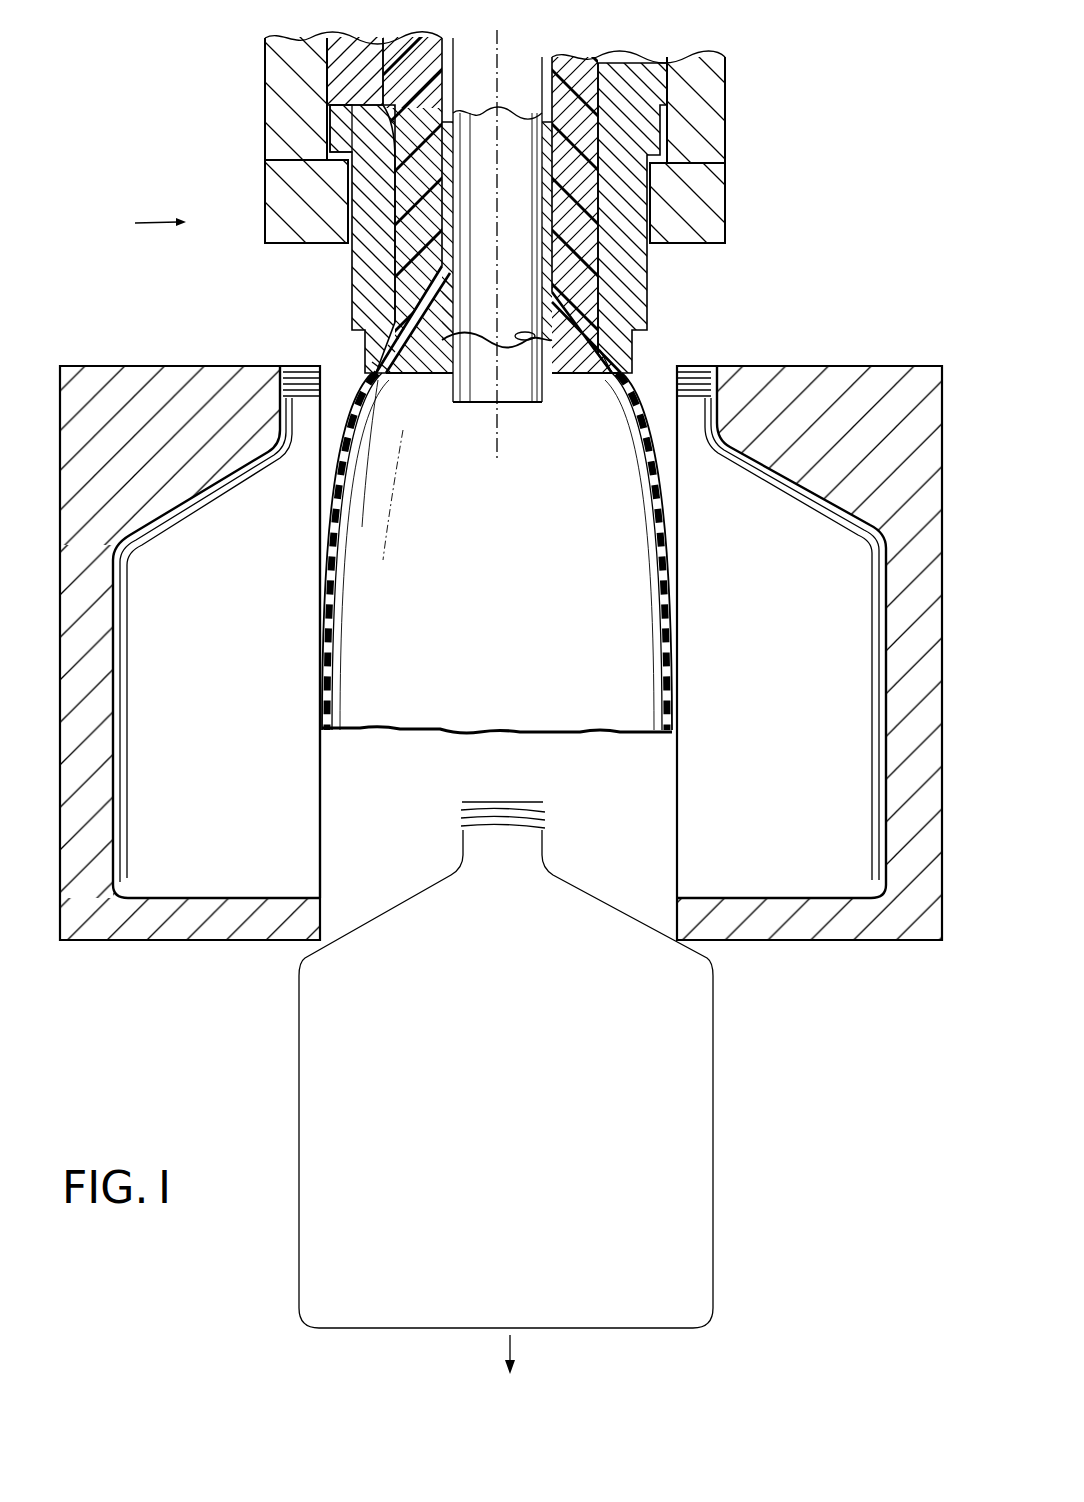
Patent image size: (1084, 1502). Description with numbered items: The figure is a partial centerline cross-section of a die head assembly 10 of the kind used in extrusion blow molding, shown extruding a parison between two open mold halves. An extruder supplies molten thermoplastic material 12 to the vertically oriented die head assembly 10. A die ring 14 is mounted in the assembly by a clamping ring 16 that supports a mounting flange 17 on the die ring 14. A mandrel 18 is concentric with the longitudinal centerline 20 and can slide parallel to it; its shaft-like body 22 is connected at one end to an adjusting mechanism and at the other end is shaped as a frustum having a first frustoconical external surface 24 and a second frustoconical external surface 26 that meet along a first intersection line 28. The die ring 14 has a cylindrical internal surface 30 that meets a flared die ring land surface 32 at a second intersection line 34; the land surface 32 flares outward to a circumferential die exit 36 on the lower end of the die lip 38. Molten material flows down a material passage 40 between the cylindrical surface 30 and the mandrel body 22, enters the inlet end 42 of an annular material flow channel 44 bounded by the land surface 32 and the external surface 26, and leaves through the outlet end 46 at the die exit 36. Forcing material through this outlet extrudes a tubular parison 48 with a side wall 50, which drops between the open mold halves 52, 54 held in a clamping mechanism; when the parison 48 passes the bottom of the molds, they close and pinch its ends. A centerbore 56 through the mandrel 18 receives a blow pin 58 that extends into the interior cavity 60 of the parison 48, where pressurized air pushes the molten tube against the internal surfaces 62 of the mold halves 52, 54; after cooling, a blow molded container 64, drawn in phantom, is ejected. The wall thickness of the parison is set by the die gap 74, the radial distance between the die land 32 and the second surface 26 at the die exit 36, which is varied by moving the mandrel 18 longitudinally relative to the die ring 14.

The die head assembly 10 is at (143, 221).
The molten thermoplastic material 12 is at (590, 188).
The die ring 14 is at (526, 218).
The clamping ring 16 is at (730, 190).
The mounting flange 17 is at (340, 132).
The mandrel 18 is at (471, 55).
The longitudinal centerline 20 is at (502, 40).
The mandrel body 22 is at (410, 186).
The first frustoconical external surface 24 is at (405, 318).
The second frustoconical external surface 26 is at (612, 352).
The first intersection line 28 is at (362, 239).
The cylindrical internal surface 30 is at (421, 188).
The die ring land surface 32 is at (597, 347).
The second intersection line 34 is at (392, 350).
The die exit 36 is at (376, 366).
The die lip 38 is at (388, 370).
The material passage 40 is at (398, 97).
The inlet end 42 is at (596, 330).
The material flow channel 44 is at (392, 376).
The outlet end 46 is at (364, 380).
The parison 48 is at (316, 500).
The side wall 50 is at (497, 578).
The mold half 52 is at (192, 629).
The mold half 54 is at (818, 365).
The centerbore 56 is at (522, 156).
The blow pin 58 is at (480, 402).
The interior cavity 60 is at (450, 712).
The internal surfaces 62 is at (232, 698).
The blow molded container 64 is at (300, 1243).
The die gap 74 is at (388, 400).